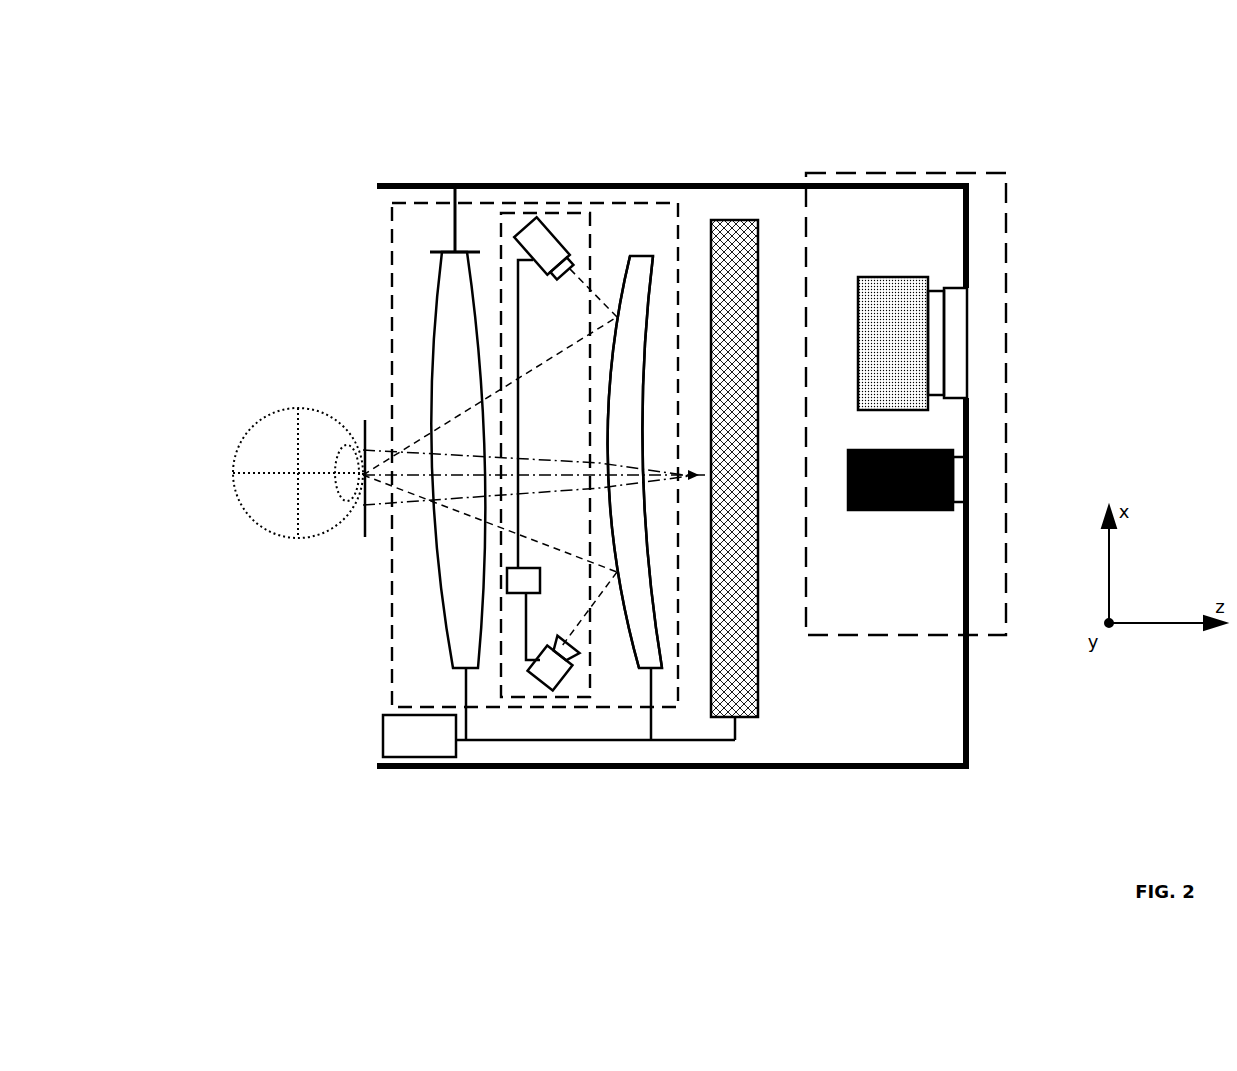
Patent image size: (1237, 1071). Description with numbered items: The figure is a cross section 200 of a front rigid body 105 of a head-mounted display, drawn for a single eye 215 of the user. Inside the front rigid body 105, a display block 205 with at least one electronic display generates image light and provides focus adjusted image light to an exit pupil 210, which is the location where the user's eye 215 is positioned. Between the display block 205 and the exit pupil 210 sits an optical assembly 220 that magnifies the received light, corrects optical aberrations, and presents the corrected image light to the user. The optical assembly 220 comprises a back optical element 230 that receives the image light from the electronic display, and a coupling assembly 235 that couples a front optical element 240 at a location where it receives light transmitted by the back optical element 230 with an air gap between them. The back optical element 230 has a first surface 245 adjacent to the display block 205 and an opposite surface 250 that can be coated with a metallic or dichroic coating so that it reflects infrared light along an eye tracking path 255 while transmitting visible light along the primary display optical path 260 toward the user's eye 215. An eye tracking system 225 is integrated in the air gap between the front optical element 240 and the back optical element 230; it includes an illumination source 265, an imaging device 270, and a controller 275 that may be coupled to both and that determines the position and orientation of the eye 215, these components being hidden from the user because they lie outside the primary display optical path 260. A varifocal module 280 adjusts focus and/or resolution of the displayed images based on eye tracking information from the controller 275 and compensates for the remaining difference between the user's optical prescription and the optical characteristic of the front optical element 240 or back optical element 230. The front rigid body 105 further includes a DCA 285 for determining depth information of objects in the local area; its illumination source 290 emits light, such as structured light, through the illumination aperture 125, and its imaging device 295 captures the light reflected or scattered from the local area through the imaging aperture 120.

The cross section 200 is at (107, 105).
The front rigid body 105 is at (933, 767).
The imaging aperture 120 is at (967, 495).
The illumination aperture 125 is at (967, 307).
The display block 205 is at (743, 235).
The exit pupil 210 is at (364, 420).
The eye 215 is at (263, 530).
The optical assembly 220 is at (402, 210).
The eye tracking system 225 is at (500, 676).
The back optical element 230 is at (640, 277).
The coupling assembly 235 is at (453, 203).
The front optical element 240 is at (440, 320).
The first surface 245 is at (658, 633).
The surface 250 is at (628, 617).
The eye tracking path 255 is at (415, 492).
The primary display optical path 260 is at (425, 480).
The illumination source 265 is at (523, 223).
The imaging device 270 is at (550, 668).
The controller 275 is at (517, 592).
The varifocal module 280 is at (382, 732).
The DCA 285 is at (1003, 270).
The illumination source 290 is at (893, 277).
The imaging device 295 is at (905, 510).